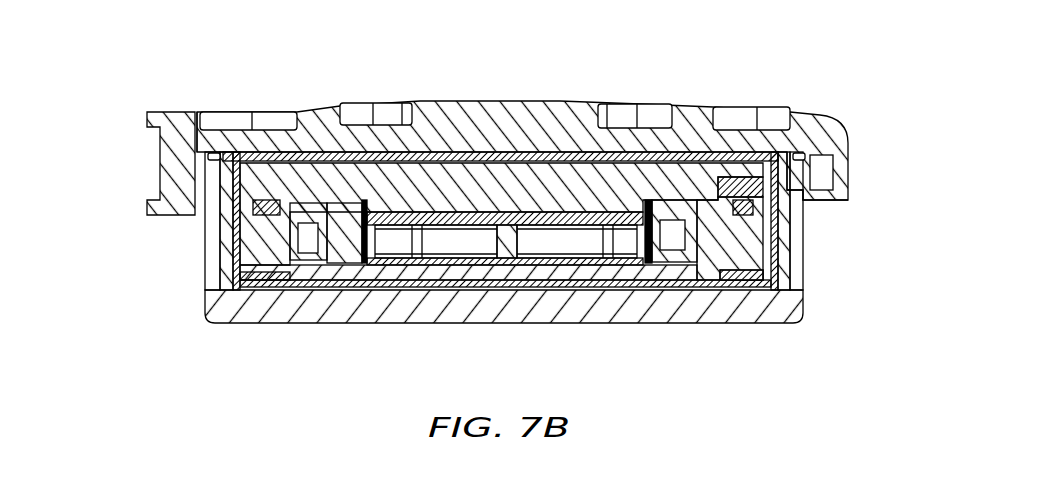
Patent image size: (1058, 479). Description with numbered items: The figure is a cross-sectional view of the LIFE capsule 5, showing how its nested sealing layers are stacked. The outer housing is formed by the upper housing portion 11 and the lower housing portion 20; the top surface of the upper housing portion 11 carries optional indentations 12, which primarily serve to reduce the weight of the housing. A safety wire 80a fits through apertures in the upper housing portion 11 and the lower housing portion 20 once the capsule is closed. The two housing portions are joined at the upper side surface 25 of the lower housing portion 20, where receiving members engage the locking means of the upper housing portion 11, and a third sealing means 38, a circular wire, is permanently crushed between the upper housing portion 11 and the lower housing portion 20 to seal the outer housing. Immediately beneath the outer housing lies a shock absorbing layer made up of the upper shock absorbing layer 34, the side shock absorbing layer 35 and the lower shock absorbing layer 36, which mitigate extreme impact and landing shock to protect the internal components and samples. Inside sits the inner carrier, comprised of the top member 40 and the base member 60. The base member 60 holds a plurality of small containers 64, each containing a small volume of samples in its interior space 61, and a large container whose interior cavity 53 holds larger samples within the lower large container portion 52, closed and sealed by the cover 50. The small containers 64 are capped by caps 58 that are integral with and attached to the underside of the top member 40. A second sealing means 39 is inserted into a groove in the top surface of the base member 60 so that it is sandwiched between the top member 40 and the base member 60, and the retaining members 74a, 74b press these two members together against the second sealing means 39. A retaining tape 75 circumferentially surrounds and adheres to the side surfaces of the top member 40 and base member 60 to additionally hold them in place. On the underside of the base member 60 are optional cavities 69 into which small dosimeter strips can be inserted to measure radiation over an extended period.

The LIFE capsule 5 is at (111, 31).
The upper housing portion 11 is at (470, 140).
The indentations 12 is at (276, 114).
The lower housing portion 20 is at (246, 310).
The upper side surface 25 is at (823, 172).
The upper shock absorbing layer 34 is at (546, 212).
The side shock absorbing layer 35 is at (221, 217).
The lower shock absorbing layer 36 is at (502, 287).
The third sealing means 38 is at (208, 148).
The second sealing means 39 is at (213, 153).
The top member 40 is at (398, 183).
The cover 50 is at (625, 212).
The lower large container portion 52 is at (374, 228).
The interior cavity 53 is at (568, 240).
The caps 58 is at (681, 200).
The base member 60 is at (343, 235).
The interior space 61 is at (310, 240).
The small containers 64 is at (677, 233).
The cavities 69 is at (448, 285).
The retaining member 74a is at (223, 268).
The retaining member 74b is at (800, 268).
The retaining tape 75 is at (228, 240).
The safety wire 80a is at (150, 121).